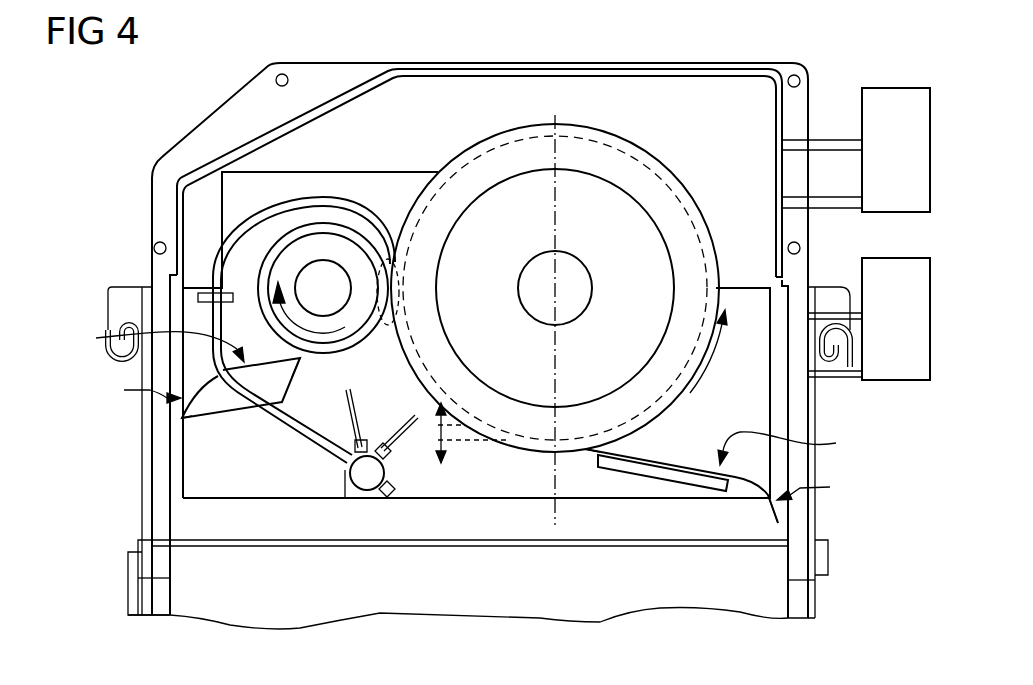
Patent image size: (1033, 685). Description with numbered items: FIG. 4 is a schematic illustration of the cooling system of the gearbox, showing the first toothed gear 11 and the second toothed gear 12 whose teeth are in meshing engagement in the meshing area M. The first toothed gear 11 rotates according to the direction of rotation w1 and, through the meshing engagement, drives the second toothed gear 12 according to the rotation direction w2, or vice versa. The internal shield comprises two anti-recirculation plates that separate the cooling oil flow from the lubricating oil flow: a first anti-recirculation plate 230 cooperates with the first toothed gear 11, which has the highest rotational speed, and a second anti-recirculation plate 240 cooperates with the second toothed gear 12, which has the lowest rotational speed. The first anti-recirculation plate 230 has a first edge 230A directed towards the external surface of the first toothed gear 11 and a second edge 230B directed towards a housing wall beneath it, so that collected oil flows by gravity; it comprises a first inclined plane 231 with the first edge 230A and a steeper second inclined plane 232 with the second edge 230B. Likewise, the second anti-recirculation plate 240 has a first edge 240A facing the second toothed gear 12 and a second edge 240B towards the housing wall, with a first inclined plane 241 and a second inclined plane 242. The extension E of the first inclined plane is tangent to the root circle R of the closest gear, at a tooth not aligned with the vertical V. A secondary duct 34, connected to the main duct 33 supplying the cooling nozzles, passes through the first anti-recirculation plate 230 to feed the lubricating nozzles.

The first toothed gear 11 is at (272, 256).
The second toothed gear 12 is at (622, 136).
The main duct 33 is at (367, 474).
The secondary duct 34 is at (213, 310).
The first anti-recirculation plate 230 is at (217, 403).
The first edge 230A is at (300, 359).
The second edge 230B is at (182, 420).
The first inclined plane 231 is at (144, 343).
The second inclined plane 232 is at (128, 391).
The second anti-recirculation plate 240 is at (677, 491).
The first edge 240A is at (586, 452).
The second edge 240B is at (771, 514).
The first inclined plane 241 is at (800, 447).
The second inclined plane 242 is at (826, 488).
The meshing area M is at (393, 262).
The root circle R is at (663, 181).
The direction of rotation w1 is at (360, 348).
The rotation direction w2 is at (700, 386).
The extension E is at (507, 441).
The vertical V is at (553, 519).